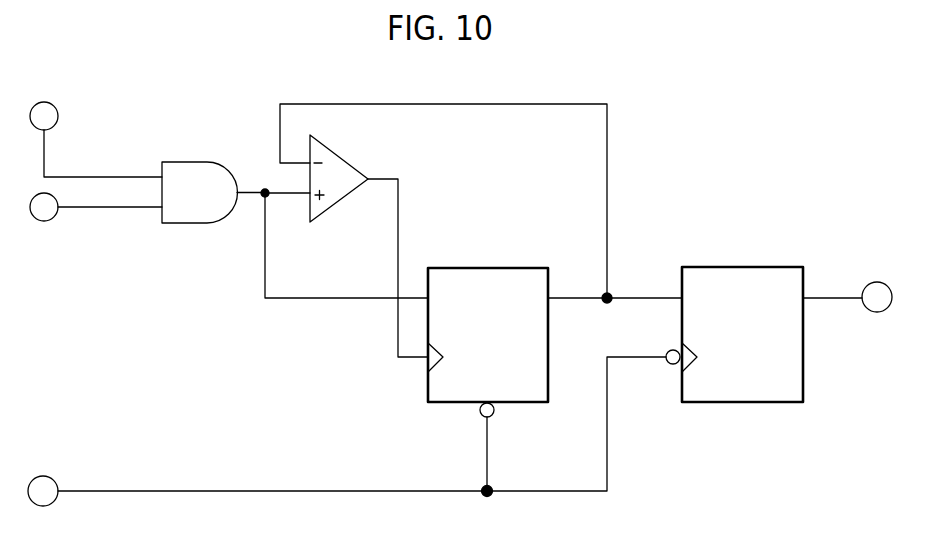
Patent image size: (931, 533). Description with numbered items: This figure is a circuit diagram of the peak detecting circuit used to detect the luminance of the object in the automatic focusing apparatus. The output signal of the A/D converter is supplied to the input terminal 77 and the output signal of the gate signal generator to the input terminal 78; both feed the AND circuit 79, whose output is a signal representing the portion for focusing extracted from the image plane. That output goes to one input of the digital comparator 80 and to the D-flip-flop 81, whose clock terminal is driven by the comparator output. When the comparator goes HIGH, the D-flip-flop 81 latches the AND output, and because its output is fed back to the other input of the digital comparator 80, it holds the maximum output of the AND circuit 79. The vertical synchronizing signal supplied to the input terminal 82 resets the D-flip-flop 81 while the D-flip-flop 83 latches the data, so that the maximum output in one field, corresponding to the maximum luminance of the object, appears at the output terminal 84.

The input terminal 77 is at (44, 221).
The input terminal 78 is at (53, 105).
The AND circuit 79 is at (192, 223).
The digital comparator 80 is at (362, 170).
The D-flip-flop 81 is at (483, 268).
The input terminal 82 is at (50, 477).
The D-flip-flop 83 is at (745, 267).
The output terminal 84 is at (871, 284).